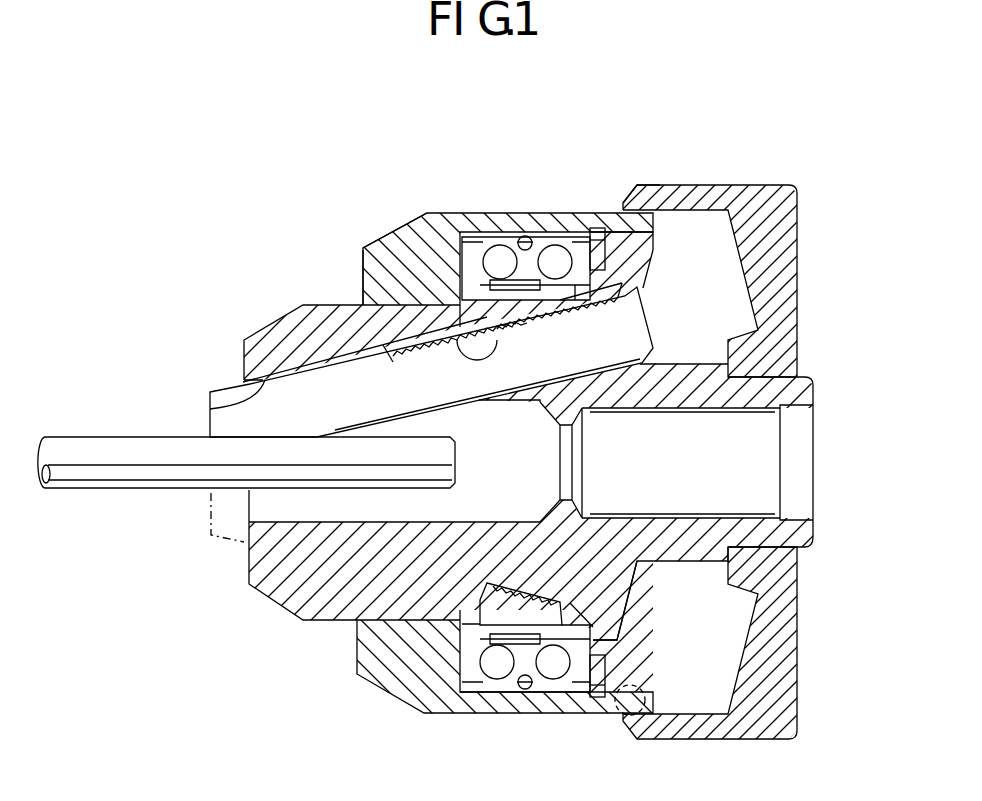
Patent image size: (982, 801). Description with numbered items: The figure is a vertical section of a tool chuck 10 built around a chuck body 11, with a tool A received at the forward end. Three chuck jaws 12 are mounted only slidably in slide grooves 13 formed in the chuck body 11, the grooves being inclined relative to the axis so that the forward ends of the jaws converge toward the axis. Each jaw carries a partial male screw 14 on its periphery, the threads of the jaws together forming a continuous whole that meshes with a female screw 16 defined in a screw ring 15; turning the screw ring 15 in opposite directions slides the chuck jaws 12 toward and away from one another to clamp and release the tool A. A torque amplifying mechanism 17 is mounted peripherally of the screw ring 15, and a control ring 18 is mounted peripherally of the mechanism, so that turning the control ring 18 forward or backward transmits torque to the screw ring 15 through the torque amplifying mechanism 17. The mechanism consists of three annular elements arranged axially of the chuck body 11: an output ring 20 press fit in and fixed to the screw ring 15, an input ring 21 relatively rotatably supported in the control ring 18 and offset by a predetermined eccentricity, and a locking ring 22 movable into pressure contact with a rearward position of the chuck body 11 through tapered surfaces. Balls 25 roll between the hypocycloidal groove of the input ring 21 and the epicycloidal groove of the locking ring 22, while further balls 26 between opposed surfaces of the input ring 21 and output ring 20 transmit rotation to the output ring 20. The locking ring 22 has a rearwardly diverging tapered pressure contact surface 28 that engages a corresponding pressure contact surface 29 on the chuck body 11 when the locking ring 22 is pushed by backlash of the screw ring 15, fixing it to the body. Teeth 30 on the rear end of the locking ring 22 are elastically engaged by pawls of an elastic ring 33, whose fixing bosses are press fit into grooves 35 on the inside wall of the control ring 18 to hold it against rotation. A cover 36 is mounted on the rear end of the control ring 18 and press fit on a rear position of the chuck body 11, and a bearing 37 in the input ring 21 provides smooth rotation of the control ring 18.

The tool chuck 10 is at (150, 308).
The chuck body 11 is at (700, 398).
The chuck jaws 12 is at (297, 380).
The slide grooves 13 is at (210, 409).
The partial male screw 14 is at (332, 306).
The screw ring 15 is at (427, 228).
The female screw 16 is at (362, 270).
The torque amplifying mechanism 17 is at (493, 198).
The control ring 18 is at (428, 216).
The output ring 20 is at (470, 235).
The input ring 21 is at (540, 248).
The locking ring 22 is at (598, 236).
The balls 25 is at (563, 270).
The balls 26 is at (500, 255).
The tapered pressure contact surface 28 is at (580, 607).
The pressure contact surface 29 is at (597, 647).
The teeth 30 is at (668, 192).
The elastic ring 33 is at (608, 250).
The grooves 35 is at (640, 718).
The cover 36 is at (783, 268).
The bearing 37 is at (523, 692).
The tool A is at (148, 492).